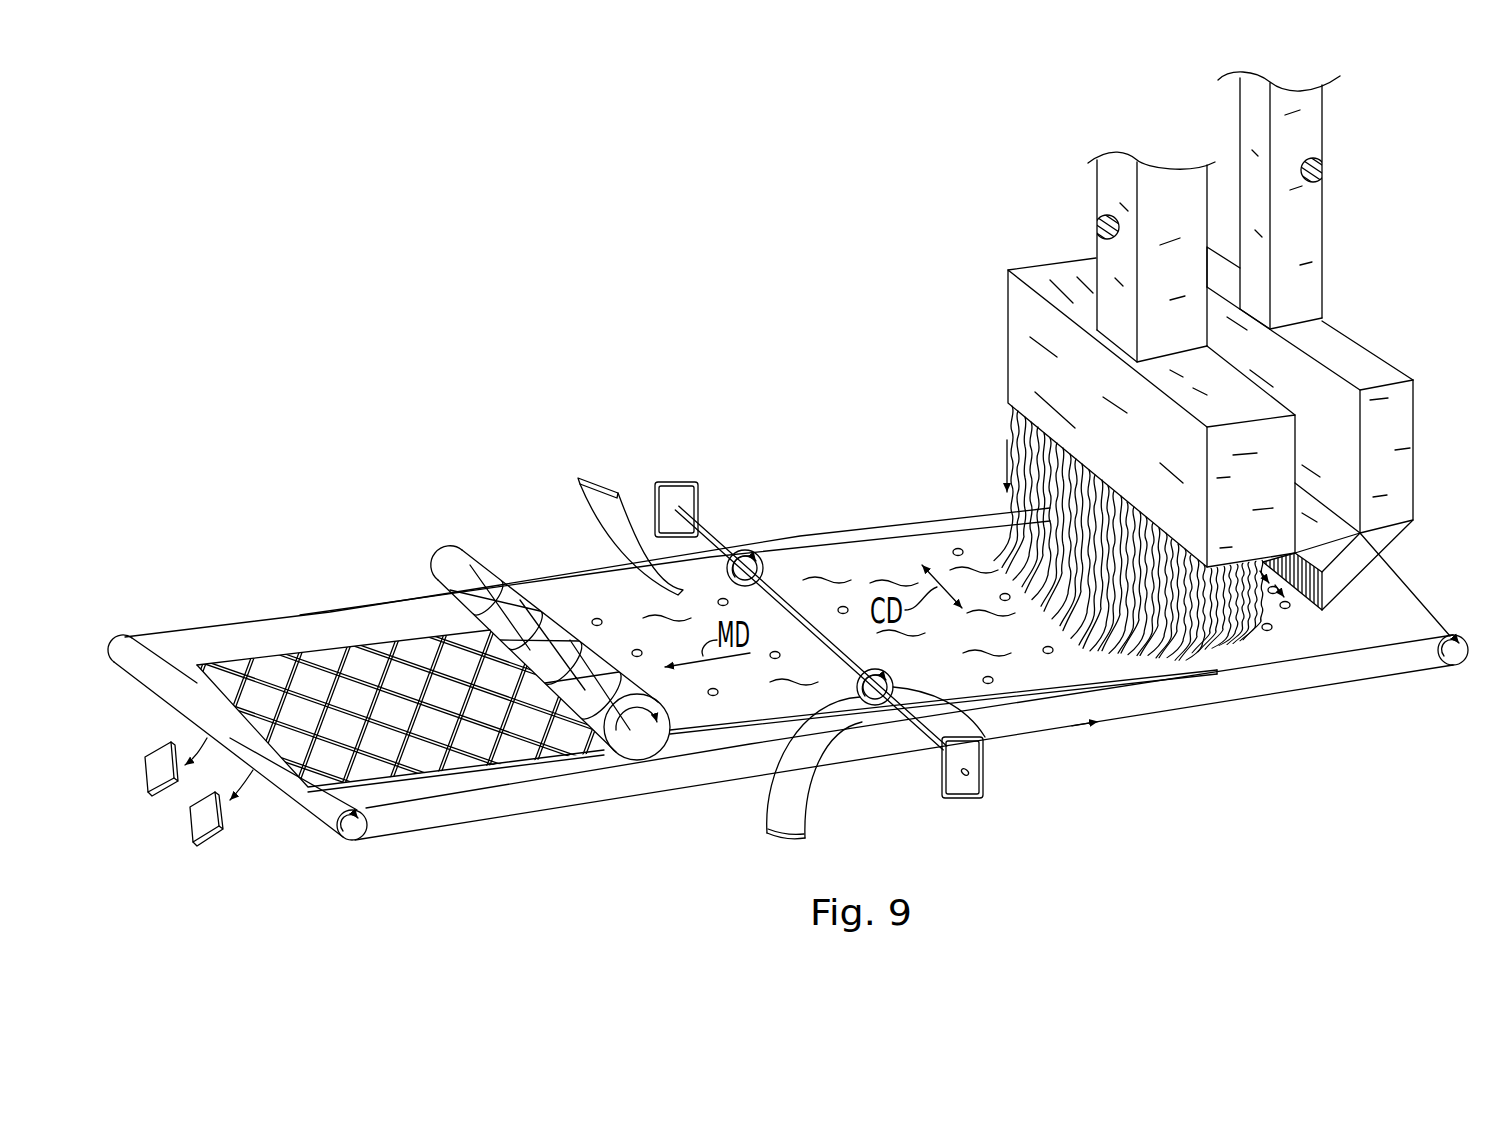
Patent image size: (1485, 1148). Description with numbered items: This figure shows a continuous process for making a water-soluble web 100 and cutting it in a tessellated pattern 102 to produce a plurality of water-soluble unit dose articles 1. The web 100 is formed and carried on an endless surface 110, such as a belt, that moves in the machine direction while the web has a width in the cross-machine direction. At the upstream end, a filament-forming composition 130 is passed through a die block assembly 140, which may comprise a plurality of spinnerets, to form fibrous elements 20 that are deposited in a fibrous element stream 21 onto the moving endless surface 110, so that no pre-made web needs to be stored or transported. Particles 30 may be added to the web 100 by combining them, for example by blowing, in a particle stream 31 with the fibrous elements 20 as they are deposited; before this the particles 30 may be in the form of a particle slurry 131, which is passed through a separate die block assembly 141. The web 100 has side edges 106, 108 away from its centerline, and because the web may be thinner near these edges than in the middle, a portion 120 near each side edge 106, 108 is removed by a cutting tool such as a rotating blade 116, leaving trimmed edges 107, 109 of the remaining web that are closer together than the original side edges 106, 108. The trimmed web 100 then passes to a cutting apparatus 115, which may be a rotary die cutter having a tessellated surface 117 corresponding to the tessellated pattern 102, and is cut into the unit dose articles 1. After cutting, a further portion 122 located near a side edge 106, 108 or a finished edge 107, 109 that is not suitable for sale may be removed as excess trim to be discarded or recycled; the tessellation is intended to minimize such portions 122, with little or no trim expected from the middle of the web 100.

The water-soluble unit dose article 1 is at (143, 783).
The fibrous elements 20 is at (827, 577).
The fibrous element stream 21 is at (1000, 427).
The particles 30 is at (957, 547).
The particle stream 31 is at (1300, 617).
The water-soluble web 100 is at (918, 555).
The tessellated pattern 102 is at (345, 665).
The side edge 106 is at (868, 552).
The trimmed edge 107 is at (580, 607).
The side edge 108 is at (1017, 707).
The trimmed edge 109 is at (707, 728).
The endless surface 110 is at (207, 637).
The cutting apparatus 115 is at (440, 557).
The rotating blade 116 is at (745, 551).
The tessellated surface 117 is at (488, 573).
The removed portion of the web 120 is at (623, 500).
The removed portion after cutting 122 is at (447, 768).
The filament-forming composition 130 is at (1097, 217).
The particle slurry 131 is at (1323, 167).
The die block assembly 140 is at (1030, 258).
The die block assembly 141 is at (1350, 333).